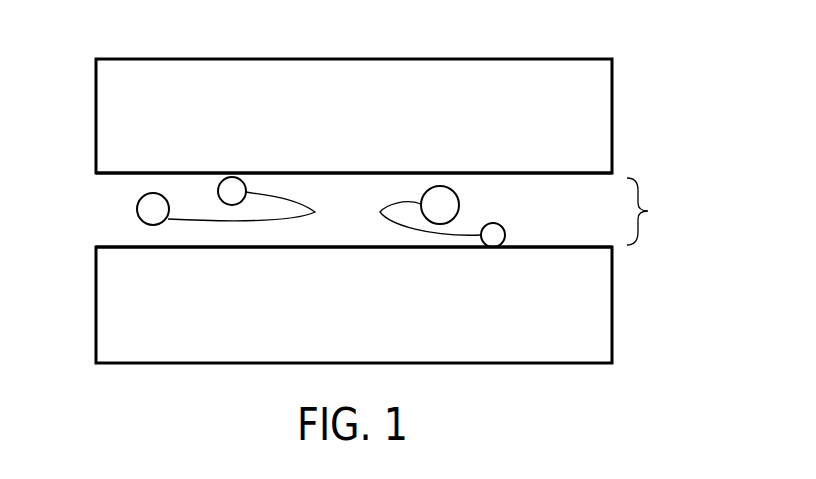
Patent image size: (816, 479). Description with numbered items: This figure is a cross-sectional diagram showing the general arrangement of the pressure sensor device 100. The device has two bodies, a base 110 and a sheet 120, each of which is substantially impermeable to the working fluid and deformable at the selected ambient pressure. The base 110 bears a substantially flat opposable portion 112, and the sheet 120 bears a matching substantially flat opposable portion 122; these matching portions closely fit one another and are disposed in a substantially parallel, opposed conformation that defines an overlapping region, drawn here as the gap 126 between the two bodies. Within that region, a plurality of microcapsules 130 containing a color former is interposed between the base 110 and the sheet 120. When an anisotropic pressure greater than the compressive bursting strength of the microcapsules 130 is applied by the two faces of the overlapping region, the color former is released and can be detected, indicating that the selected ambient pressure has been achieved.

The pressure sensor device 100 is at (385, 239).
The base 110 is at (377, 322).
The opposable portion of the base 112 is at (117, 247).
The sheet 120 is at (377, 132).
The opposable portion of the sheet 122 is at (522, 175).
The gap between substrates 126 is at (663, 211).
The microcapsules 130 is at (321, 212).